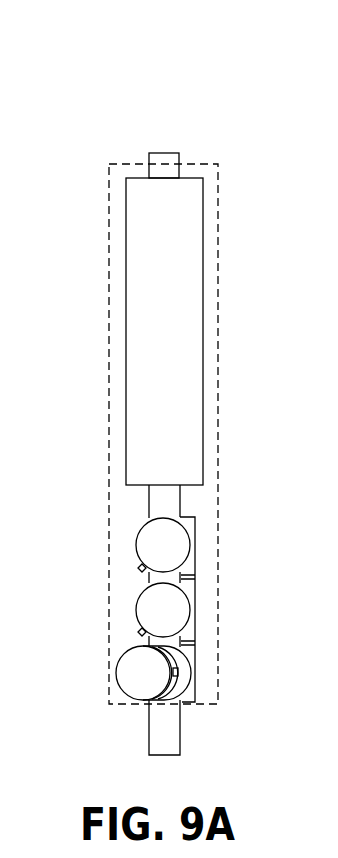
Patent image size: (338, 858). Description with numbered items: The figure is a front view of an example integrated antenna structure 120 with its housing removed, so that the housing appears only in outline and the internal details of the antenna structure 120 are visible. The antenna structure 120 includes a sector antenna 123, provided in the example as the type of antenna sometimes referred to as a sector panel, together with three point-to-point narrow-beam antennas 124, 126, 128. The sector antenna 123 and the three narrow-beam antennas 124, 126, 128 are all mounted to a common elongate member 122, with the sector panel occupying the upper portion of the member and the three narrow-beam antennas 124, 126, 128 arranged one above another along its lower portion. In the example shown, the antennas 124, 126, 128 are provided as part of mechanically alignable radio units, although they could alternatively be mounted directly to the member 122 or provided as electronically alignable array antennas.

The antenna structure 120 is at (133, 86).
The elongate member 122 is at (163, 152).
The sector antenna 123 is at (203, 287).
The point-to-point narrow-beam antenna 124 is at (160, 545).
The point-to-point narrow-beam antenna 126 is at (160, 610).
The point-to-point narrow-beam antenna 128 is at (141, 673).